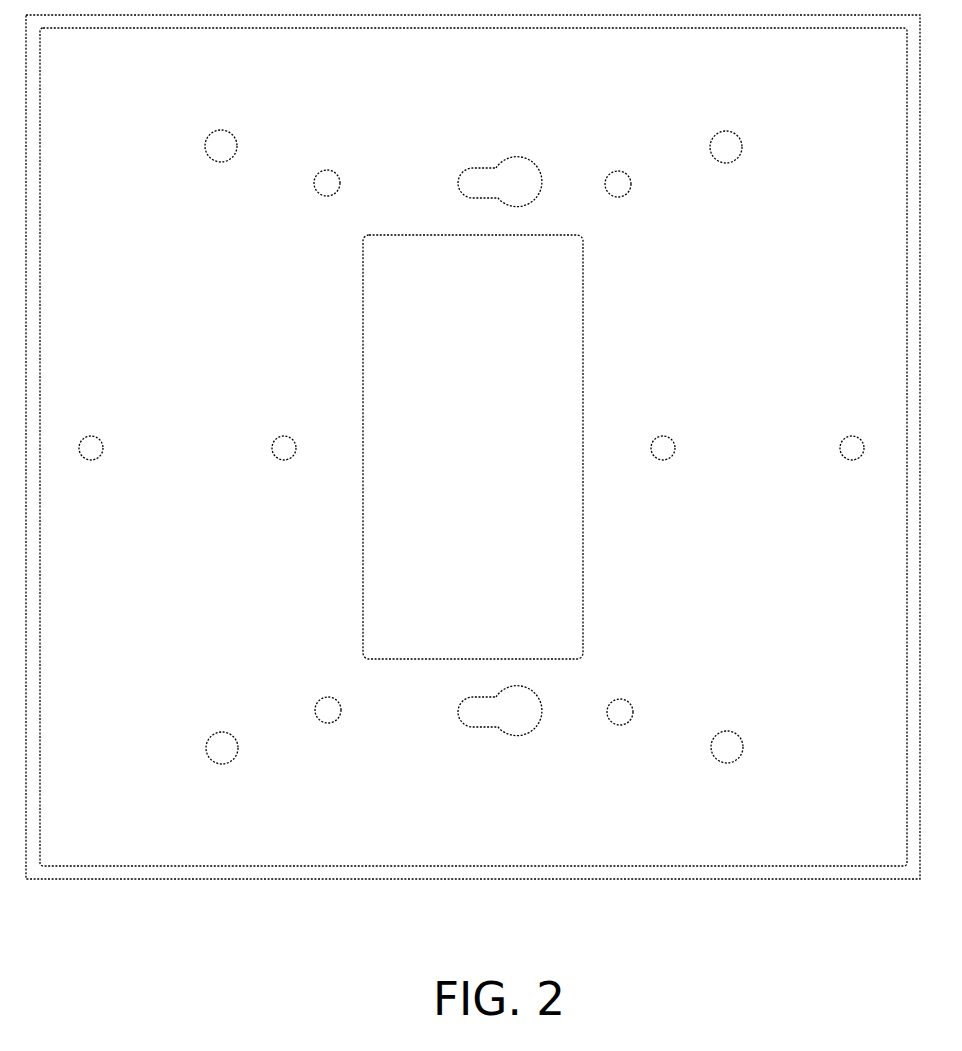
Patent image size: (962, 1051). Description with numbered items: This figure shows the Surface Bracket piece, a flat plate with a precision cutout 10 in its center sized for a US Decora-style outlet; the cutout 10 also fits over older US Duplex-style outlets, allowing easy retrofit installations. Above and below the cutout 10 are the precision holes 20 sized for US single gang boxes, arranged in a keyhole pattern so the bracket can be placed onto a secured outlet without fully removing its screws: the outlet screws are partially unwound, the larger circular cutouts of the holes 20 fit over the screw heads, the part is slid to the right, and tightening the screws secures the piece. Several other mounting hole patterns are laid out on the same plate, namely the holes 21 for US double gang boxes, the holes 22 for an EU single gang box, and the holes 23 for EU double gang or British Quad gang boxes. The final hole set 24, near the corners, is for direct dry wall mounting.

The precision cutout 10 is at (528, 447).
The precision holes for US single gang boxes 20 is at (500, 453).
The mounting holes for US double gang boxes 21 is at (479, 447).
The mounting holes for EU single gang box 22 is at (479, 491).
The mounting holes for EU double gang or British Quad gang boxes 23 is at (477, 408).
The holes for direct dry wall mounting 24 is at (488, 443).